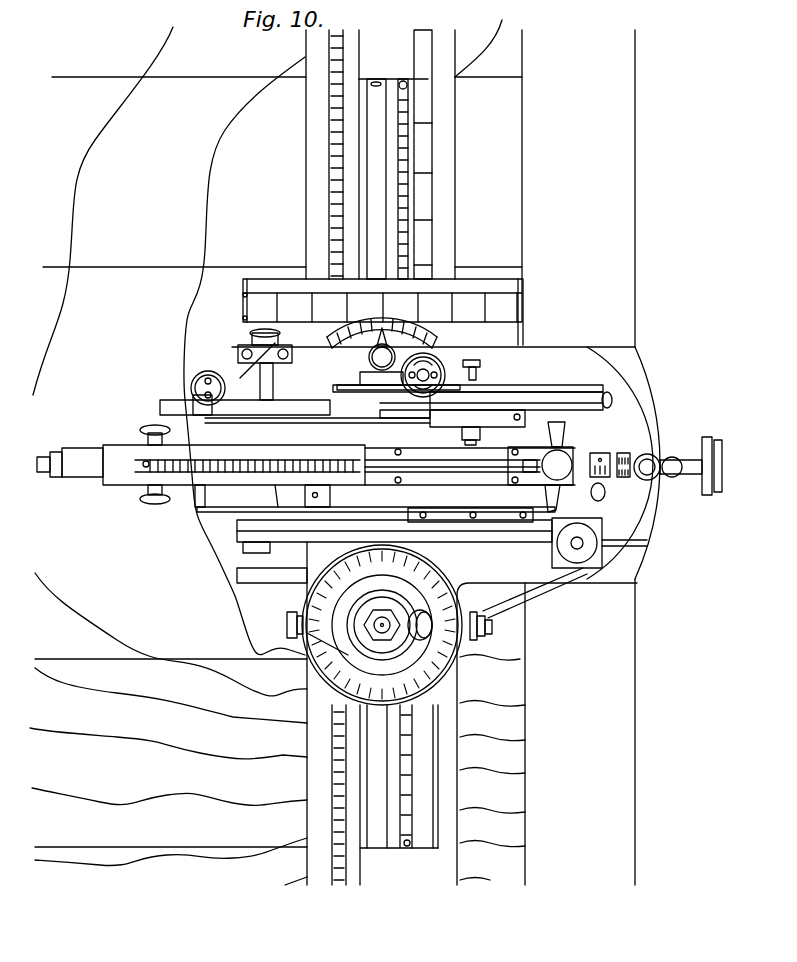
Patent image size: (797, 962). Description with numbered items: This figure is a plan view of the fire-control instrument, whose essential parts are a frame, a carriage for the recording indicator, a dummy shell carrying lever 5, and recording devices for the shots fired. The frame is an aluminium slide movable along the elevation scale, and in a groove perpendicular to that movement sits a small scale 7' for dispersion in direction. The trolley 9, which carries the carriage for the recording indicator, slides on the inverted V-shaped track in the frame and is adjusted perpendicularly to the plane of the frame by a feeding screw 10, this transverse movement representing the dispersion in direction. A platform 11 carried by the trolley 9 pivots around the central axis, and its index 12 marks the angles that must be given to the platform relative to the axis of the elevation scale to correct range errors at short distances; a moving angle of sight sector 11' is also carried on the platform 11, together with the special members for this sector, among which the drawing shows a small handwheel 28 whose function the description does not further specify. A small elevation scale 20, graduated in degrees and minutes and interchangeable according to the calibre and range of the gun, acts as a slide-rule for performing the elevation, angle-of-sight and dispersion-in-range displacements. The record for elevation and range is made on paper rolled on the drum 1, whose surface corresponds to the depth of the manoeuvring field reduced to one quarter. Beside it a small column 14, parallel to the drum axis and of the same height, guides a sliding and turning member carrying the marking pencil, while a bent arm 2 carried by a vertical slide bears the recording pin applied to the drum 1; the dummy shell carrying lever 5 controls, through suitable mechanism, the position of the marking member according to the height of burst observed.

The drum 1 is at (287, 625).
The bent arm 2 is at (530, 590).
The dummy shell carrying lever 5 is at (73, 468).
The small scale for dispersion in direction 7' is at (399, 309).
The trolley 9 is at (263, 568).
The feeding screw 10 is at (693, 465).
The platform 11 is at (417, 360).
The moving angle of sight sector 11' is at (615, 452).
The index 12 is at (428, 333).
The small column 14 is at (585, 547).
The small elevation scale 20 is at (353, 870).
The adjusting handwheel 28 is at (477, 376).